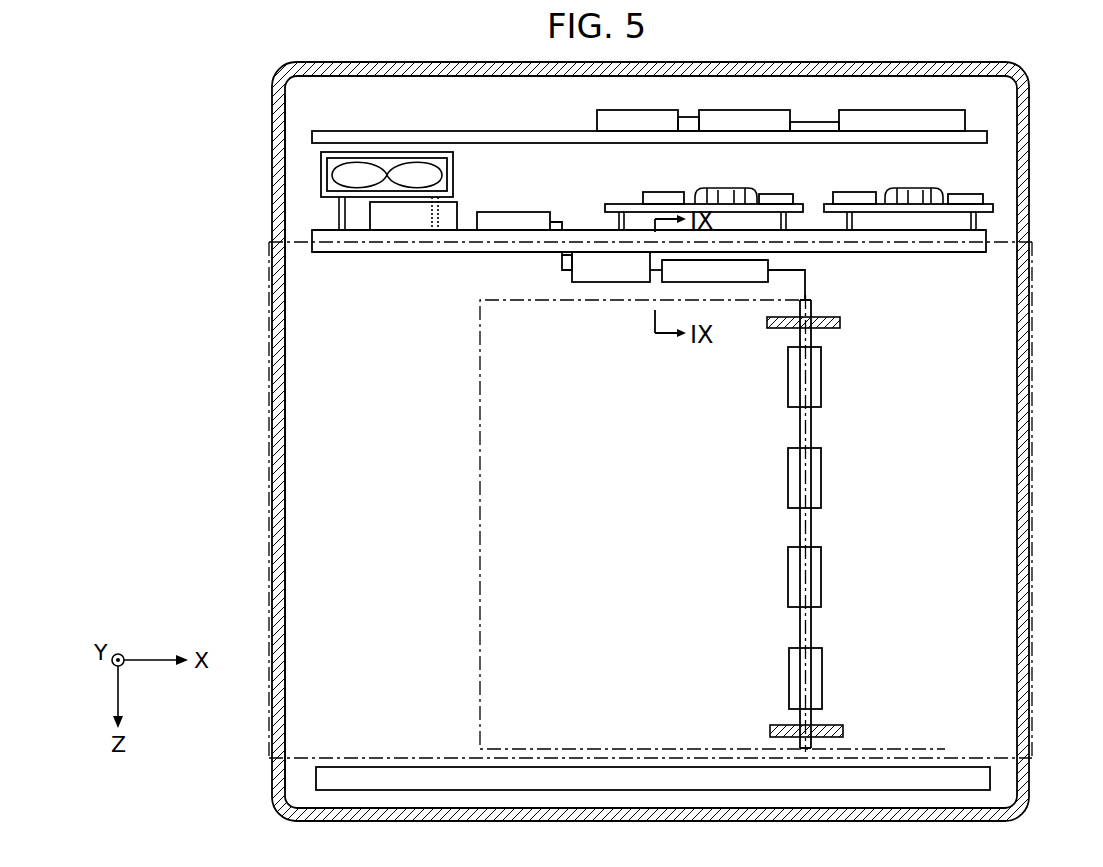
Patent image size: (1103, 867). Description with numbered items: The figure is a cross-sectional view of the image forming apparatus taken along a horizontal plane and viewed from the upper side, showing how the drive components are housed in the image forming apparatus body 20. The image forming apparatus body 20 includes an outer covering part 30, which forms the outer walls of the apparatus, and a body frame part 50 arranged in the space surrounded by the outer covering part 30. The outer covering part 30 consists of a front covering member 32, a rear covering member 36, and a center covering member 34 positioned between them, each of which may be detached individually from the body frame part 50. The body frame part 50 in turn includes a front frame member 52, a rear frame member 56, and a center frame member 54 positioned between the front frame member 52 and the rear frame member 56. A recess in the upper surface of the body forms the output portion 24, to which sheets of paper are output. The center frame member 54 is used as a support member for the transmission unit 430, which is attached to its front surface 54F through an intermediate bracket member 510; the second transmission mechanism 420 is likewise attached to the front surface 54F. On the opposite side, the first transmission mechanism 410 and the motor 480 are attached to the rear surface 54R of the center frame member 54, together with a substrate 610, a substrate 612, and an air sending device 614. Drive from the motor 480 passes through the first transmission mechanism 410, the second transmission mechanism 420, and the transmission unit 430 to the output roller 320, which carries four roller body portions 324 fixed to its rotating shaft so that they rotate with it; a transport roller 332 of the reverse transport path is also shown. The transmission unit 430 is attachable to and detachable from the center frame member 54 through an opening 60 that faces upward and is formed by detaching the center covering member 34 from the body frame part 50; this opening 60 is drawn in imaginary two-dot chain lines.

The image forming apparatus body 20 is at (264, 412).
The output portion 24 is at (481, 398).
The outer covering part 30 is at (262, 172).
The front covering member 32 is at (275, 788).
The center covering member 34 is at (272, 365).
The rear covering member 36 is at (272, 126).
The body frame part 50 is at (355, 755).
The front frame member 52 is at (432, 767).
The center frame member 54 is at (327, 253).
The front surface of the center frame member 54F is at (470, 262).
The rear surface of the center frame member 54R is at (409, 226).
The rear frame member 56 is at (354, 131).
The opening 60 is at (1032, 262).
The output roller 320 is at (792, 529).
The roller body portion 324 is at (821, 378).
The transport roller 332 is at (800, 625).
The first transmission mechanism 410 is at (538, 212).
The second transmission mechanism 420 is at (600, 282).
The transmission unit 430 is at (732, 282).
The motor 480 is at (366, 218).
The intermediate bracket member 510 is at (755, 259).
The substrate 610 is at (994, 203).
The substrate 612 is at (806, 204).
The air sending device 614 is at (452, 170).